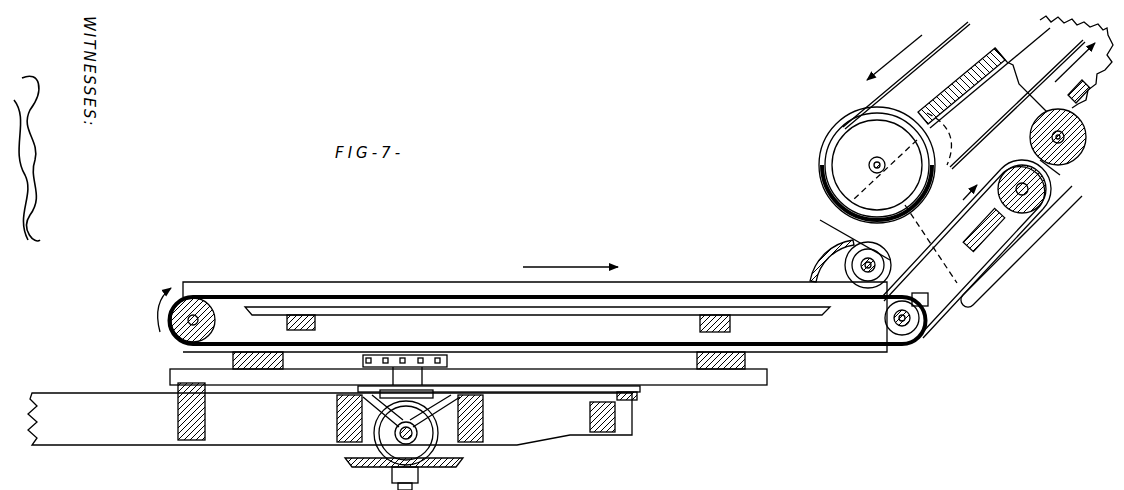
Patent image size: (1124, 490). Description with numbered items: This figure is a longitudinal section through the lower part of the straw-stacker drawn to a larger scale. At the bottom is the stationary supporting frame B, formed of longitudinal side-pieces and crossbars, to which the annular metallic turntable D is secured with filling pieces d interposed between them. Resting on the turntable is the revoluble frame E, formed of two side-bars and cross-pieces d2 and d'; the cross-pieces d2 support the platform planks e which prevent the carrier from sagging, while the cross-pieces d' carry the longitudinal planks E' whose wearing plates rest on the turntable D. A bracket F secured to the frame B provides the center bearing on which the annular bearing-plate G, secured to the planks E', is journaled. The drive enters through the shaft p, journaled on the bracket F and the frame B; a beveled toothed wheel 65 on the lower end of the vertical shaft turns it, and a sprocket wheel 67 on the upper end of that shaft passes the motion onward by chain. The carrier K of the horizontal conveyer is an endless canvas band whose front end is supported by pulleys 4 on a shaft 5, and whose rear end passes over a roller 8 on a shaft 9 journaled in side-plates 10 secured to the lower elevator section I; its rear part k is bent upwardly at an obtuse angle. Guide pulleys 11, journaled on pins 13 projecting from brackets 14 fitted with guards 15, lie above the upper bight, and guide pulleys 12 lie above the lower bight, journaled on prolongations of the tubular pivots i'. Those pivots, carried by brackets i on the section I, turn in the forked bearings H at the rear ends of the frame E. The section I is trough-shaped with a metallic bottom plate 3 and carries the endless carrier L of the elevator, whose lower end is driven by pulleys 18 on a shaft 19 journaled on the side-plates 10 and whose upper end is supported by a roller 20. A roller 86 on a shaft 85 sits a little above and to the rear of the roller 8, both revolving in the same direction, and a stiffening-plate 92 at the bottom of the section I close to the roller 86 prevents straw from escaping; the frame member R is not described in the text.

The metallic bottom plate 3 is at (1093, 78).
The pulleys 4 is at (197, 298).
The shaft 5 is at (186, 325).
The roller 8 is at (1043, 217).
The shaft 9 is at (1057, 195).
The side-plates 10 is at (1060, 175).
The guide pulleys 11 is at (844, 232).
The guide pulleys 12 is at (907, 333).
The pins 13 is at (857, 257).
The brackets 14 is at (903, 205).
The guards 15 is at (820, 265).
The pulleys 18 is at (850, 145).
The shaft 19 is at (872, 165).
The roller 20 is at (400, 457).
The beveled toothed wheel 65 is at (463, 467).
The sprocket wheel 67 is at (430, 360).
The shaft 85 is at (1092, 134).
The roller 86 is at (1053, 137).
The stiffening-plate 92 is at (1072, 107).
The stationary supporting frame B is at (152, 432).
The annular metallic turntable D is at (638, 392).
The revoluble frame E is at (537, 272).
The longitudinal planks E' is at (491, 396).
The bracket F is at (437, 405).
The annular bearing-plate G is at (392, 387).
The forked bearings H is at (920, 320).
The lower section I is at (1053, 35).
The carrier K is at (242, 293).
The endless carrier L is at (866, 80).
The frame R is at (967, 307).
The filling pieces d is at (645, 411).
The cross-pieces d' is at (795, 383).
The cross-pieces d2 is at (730, 330).
The platform planks e is at (650, 315).
The brackets i is at (942, 250).
The tubular pivots i' is at (981, 280).
The rear part k is at (990, 252).
The shaft p is at (393, 440).